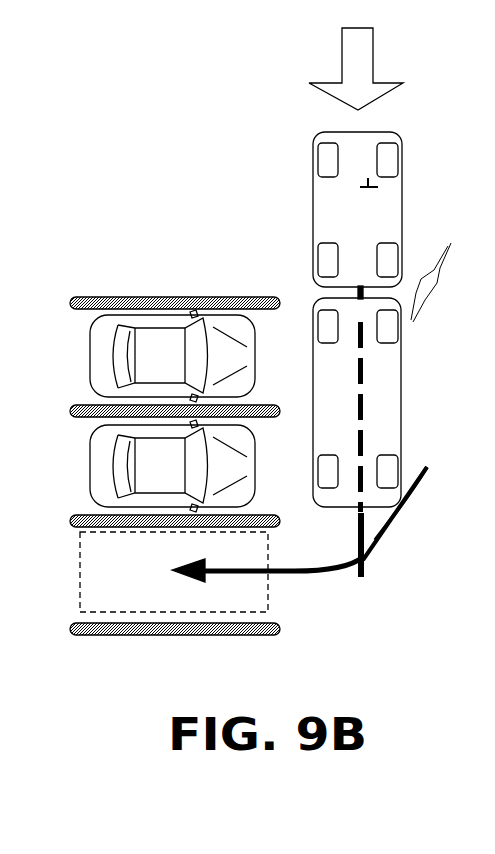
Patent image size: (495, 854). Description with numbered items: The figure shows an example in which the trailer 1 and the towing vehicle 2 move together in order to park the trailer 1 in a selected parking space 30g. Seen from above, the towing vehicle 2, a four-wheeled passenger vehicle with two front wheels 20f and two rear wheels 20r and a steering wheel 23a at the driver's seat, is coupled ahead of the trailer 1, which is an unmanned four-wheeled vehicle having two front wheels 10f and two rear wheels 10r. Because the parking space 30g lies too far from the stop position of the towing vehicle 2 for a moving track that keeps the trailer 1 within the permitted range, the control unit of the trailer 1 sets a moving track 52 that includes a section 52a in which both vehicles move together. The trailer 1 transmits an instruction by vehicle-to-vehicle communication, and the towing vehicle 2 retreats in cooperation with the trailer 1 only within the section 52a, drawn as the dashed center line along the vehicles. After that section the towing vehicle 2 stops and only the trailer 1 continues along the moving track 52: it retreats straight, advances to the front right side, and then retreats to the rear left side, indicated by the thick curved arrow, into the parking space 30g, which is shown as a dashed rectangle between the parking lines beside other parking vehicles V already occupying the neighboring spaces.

The trailer 1 is at (397, 405).
The towing vehicle 2 is at (355, 209).
The front wheels 10f is at (402, 333).
The rear wheels 10r is at (402, 455).
The front wheels 20f is at (313, 165).
The rear wheels 20r is at (313, 258).
The steering wheel 23a is at (380, 187).
The moving track 52 is at (412, 524).
The section 52a is at (365, 365).
The parking vehicles V is at (90, 358).
The parking space 30g is at (175, 614).